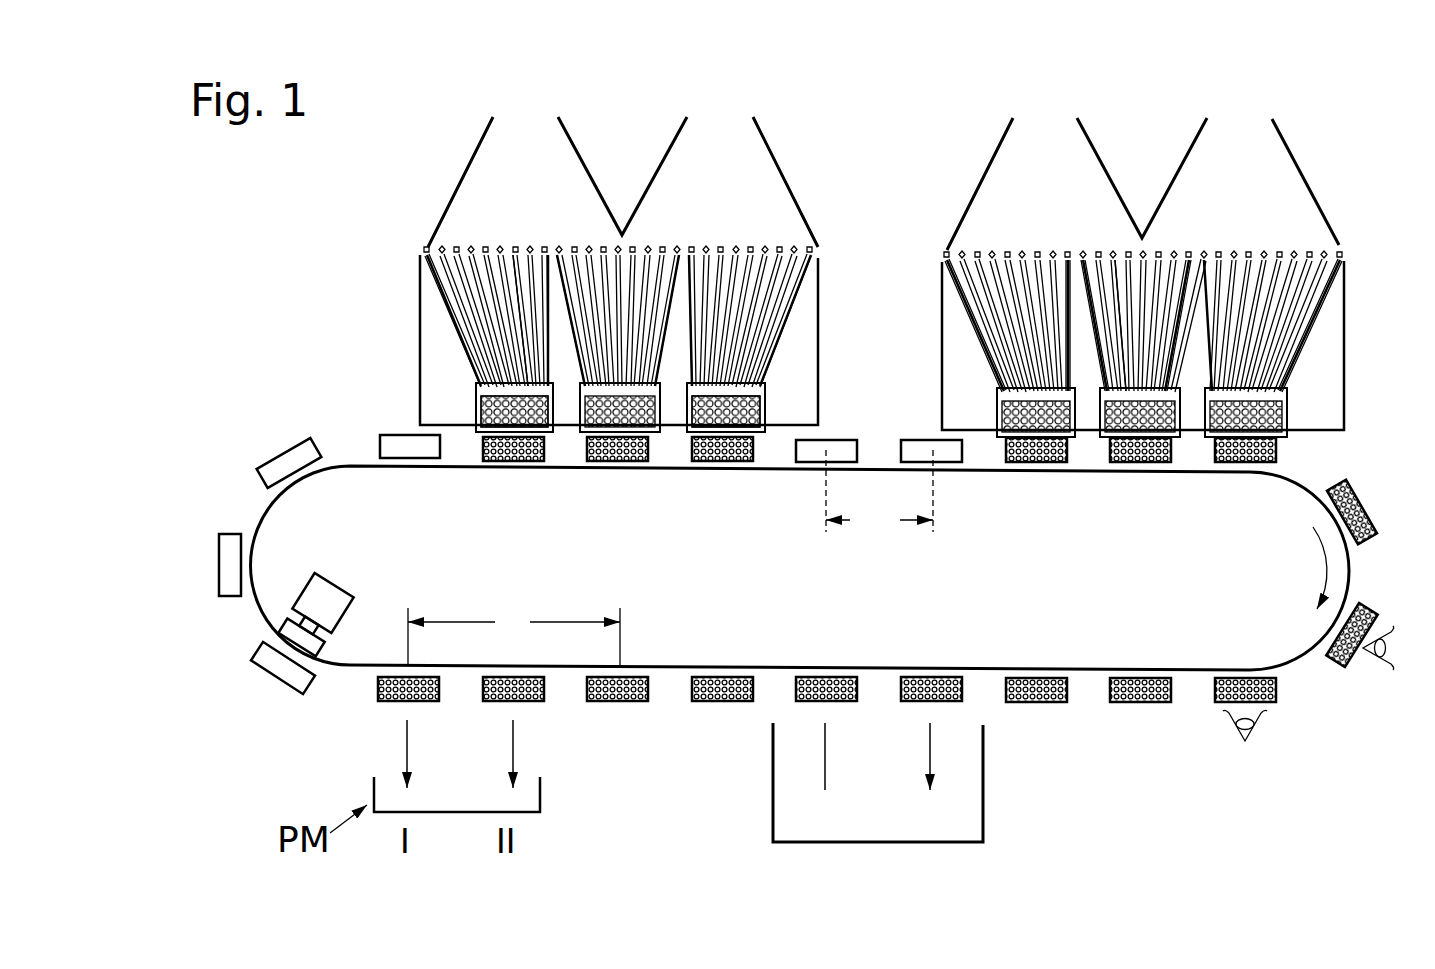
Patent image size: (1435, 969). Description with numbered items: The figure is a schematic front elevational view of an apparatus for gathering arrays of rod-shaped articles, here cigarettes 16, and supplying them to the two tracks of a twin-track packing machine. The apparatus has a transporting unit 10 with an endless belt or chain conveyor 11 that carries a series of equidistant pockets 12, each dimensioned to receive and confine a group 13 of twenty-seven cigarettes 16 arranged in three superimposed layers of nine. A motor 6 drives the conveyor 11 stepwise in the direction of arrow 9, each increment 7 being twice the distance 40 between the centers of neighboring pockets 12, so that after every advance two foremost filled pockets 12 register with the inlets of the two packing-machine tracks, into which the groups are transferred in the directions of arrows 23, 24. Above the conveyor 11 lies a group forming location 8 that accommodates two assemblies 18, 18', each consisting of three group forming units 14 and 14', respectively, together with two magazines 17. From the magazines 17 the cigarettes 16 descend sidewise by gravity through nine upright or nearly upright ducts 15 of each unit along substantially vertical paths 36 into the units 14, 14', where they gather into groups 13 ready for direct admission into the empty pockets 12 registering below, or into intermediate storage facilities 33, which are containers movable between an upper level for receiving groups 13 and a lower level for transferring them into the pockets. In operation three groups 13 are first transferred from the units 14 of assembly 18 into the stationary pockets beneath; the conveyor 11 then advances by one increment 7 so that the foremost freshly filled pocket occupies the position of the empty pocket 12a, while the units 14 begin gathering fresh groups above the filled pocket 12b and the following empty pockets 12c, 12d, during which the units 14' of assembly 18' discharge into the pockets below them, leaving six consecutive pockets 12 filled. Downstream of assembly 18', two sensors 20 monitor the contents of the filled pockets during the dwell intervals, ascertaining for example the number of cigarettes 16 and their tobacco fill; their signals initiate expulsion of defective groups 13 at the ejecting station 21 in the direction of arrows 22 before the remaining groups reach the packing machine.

The motor 6 is at (333, 588).
The increment 7 is at (514, 633).
The group forming location 8 is at (1307, 148).
The arrow 9 is at (1328, 558).
The transporting unit 10 is at (302, 425).
The endless belt or chain conveyor 11 is at (380, 467).
The receptacles or pockets 12 is at (400, 437).
The empty pocket 12a is at (940, 463).
The filled pocket 12b is at (515, 462).
The empty pocket 12c is at (421, 460).
The empty pocket 12d is at (307, 472).
The group 13 is at (478, 421).
The group forming unit 14 is at (638, 298).
The group forming unit 14' is at (1189, 336).
The duct 15 is at (523, 268).
The cigarettes 16 is at (757, 408).
The magazine 17 is at (527, 140).
The assembly 18 is at (663, 293).
The assembly 18' is at (1188, 313).
The sensor 20 is at (1257, 731).
The ejecting or expelling station 21 is at (965, 818).
The arrows 22 is at (825, 735).
The arrow 23 is at (407, 748).
The arrow 24 is at (513, 750).
The intermediate storage facility 33 is at (475, 408).
The path 36 is at (1274, 353).
The distance 40 is at (879, 495).